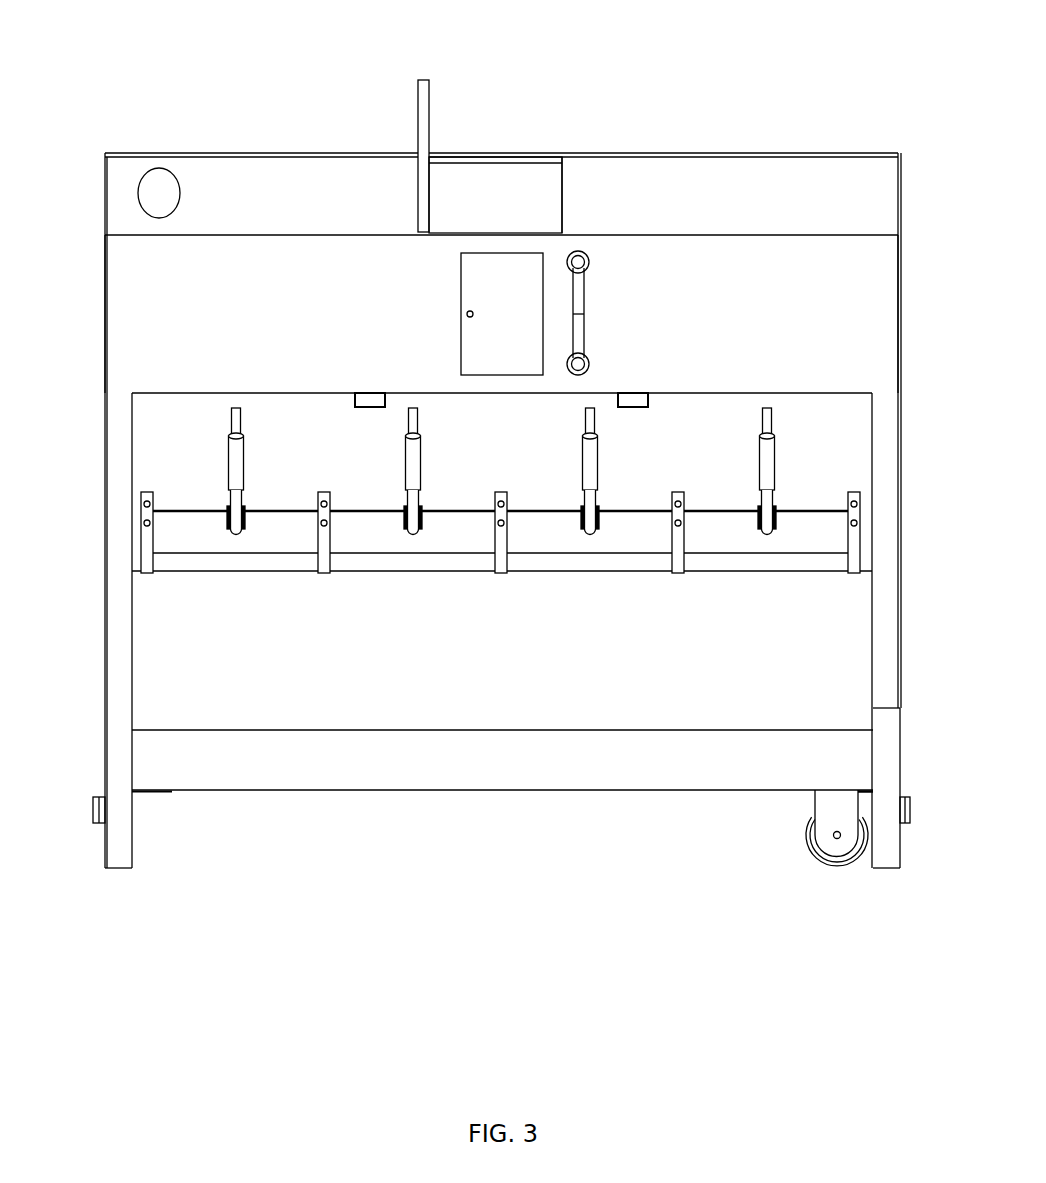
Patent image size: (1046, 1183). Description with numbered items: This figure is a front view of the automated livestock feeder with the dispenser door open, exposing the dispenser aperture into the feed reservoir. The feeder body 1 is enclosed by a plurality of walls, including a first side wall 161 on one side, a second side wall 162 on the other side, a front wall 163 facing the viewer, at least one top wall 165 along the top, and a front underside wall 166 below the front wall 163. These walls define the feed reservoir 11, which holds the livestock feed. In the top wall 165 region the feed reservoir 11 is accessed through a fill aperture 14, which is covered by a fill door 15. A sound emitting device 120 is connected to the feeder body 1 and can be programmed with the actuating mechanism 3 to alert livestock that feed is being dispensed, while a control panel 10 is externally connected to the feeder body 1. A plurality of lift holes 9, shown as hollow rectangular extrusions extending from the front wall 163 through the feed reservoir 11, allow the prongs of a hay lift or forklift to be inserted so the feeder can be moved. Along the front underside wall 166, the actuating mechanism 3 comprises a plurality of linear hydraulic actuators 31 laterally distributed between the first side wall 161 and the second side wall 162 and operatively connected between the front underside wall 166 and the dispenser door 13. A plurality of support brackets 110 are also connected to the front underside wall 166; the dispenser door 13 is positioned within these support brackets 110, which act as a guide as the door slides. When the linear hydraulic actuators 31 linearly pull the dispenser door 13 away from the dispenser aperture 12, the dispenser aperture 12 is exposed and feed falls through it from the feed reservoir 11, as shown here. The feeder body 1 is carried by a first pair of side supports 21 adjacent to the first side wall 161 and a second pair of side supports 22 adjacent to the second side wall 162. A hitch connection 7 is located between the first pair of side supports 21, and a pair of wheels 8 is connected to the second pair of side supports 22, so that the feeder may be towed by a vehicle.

The feeder body 1 is at (121, 126).
The actuating mechanism 3 is at (500, 522).
The hitch connection 7 is at (97, 815).
The pair of wheels 8 is at (816, 871).
The lift holes 9 is at (373, 398).
The control panel 10 is at (472, 298).
The feed reservoir 11 is at (481, 184).
The dispenser aperture 12 is at (634, 564).
The dispenser door 13 is at (292, 520).
The fill aperture 14 is at (563, 207).
The fill door 15 is at (423, 82).
The first pair of side supports 21 is at (94, 639).
The second pair of side supports 22 is at (910, 639).
The linear hydraulic actuators 31 is at (240, 482).
The support brackets 110 is at (150, 562).
The sound emitting device 120 is at (181, 192).
The first side wall 161 is at (105, 300).
The second side wall 162 is at (898, 300).
The front wall 163 is at (703, 313).
The top wall 165 is at (750, 200).
The front underside wall 166 is at (662, 453).